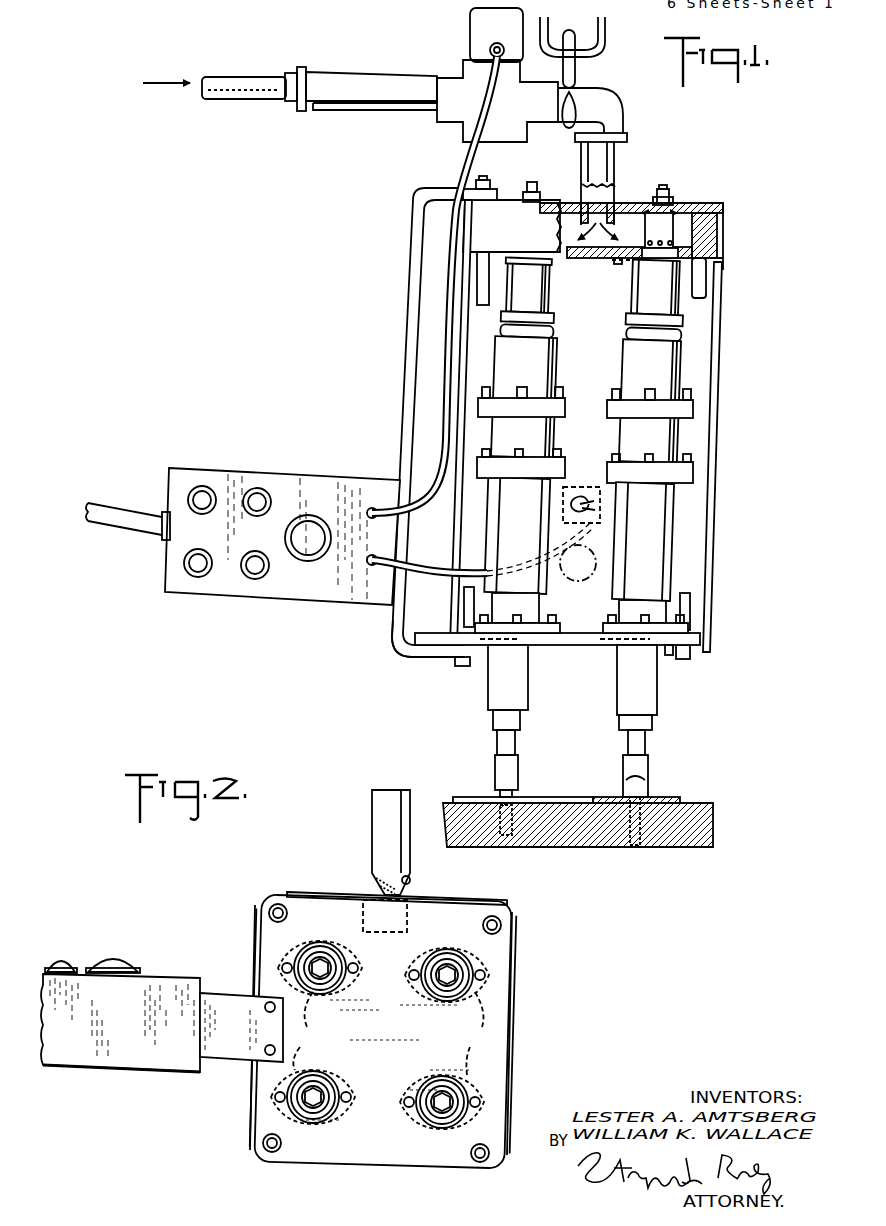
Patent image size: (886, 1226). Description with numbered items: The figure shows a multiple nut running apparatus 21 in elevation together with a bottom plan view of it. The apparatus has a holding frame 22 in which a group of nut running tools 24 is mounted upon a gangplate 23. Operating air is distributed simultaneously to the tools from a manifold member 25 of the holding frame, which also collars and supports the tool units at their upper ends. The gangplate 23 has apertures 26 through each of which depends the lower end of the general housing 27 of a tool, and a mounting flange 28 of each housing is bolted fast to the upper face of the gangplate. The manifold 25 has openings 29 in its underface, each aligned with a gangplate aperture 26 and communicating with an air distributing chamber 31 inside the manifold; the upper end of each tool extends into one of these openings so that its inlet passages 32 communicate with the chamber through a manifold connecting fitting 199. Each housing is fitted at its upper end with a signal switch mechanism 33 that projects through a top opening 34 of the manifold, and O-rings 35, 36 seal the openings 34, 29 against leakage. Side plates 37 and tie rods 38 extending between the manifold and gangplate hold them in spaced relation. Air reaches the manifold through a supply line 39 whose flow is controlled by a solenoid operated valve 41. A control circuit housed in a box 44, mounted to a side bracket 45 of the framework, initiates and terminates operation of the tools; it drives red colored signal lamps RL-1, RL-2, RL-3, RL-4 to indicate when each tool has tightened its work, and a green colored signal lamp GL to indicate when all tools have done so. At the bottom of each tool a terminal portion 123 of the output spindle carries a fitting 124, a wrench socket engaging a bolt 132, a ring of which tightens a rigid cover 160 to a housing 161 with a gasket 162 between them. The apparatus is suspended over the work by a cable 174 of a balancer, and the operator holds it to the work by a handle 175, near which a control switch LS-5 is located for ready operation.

In FIG. 1, the multiple nut running apparatus 21 is at (453, 56).
In FIG. 1, the solenoid operated valve 41 is at (472, 31).
In FIG. 1, the supply line 39 is at (373, 110).
In FIG. 1, the cable 174 is at (595, 40).
In FIG. 1, the top opening 34 is at (640, 194).
In FIG. 1, the manifold member 25 is at (507, 190).
In FIG. 1, the signal switch mechanism 33 is at (536, 183).
In FIG. 1, the air distributing chamber 31 is at (698, 227).
In FIG. 1, the O-ring 36 is at (716, 256).
In FIG. 1, the O-ring 35 is at (684, 208).
In FIG. 1, the manifold connecting fitting 199 is at (651, 232).
In FIG. 1, the inlet passages 32 is at (660, 262).
In FIG. 1, the manifold openings 29 is at (636, 261).
In FIG. 1, the tie rods 38 is at (708, 283).
In FIG. 2, the tie rods 38 is at (278, 906).
In FIG. 1, the holding frame 22 is at (720, 394).
In FIG. 1, the side plates 37 is at (452, 515).
In FIG. 2, the side plates 37 is at (256, 932).
In FIG. 1, the side bracket 45 is at (392, 634).
In FIG. 2, the side bracket 45 is at (228, 1063).
In FIG. 1, the gangplate 23 is at (583, 648).
In FIG. 2, the gangplate 23 is at (403, 1030).
In FIG. 1, the apertures 26 is at (666, 660).
In FIG. 1, the nut running tools 24 is at (623, 351).
In FIG. 2, the nut running tools 24 is at (320, 947).
In FIG. 1, the general housing 27 is at (677, 574).
In FIG. 1, the mounting flange 28 is at (596, 626).
In FIG. 2, the mounting flange 28 is at (389, 1033).
In FIG. 1, the control switch LS-5 is at (583, 487).
In FIG. 2, the control switch LS-5 is at (408, 876).
In FIG. 1, the handle 175 is at (598, 553).
In FIG. 2, the handle 175 is at (373, 812).
In FIG. 1, the terminal portion of the output spindle 123 is at (497, 737).
In FIG. 1, the fitting 124 is at (518, 764).
In FIG. 1, the bolt 132 is at (495, 790).
In FIG. 1, the rigid cover 160 is at (680, 801).
In FIG. 1, the gasket 162 is at (682, 812).
In FIG. 1, the housing 161 is at (700, 834).
In FIG. 1, the box 44 is at (228, 600).
In FIG. 2, the box 44 is at (160, 972).
In FIG. 1, the red colored signal lamp RL-1 is at (204, 490).
In FIG. 1, the red colored signal lamp RL-2 is at (263, 492).
In FIG. 1, the red colored signal lamp RL-3 is at (194, 573).
In FIG. 1, the red colored signal lamp RL-4 is at (260, 580).
In FIG. 2, the red colored signal lamp RL-4 is at (62, 966).
In FIG. 1, the green colored signal lamp GL is at (307, 530).
In FIG. 2, the green colored signal lamp GL is at (112, 964).